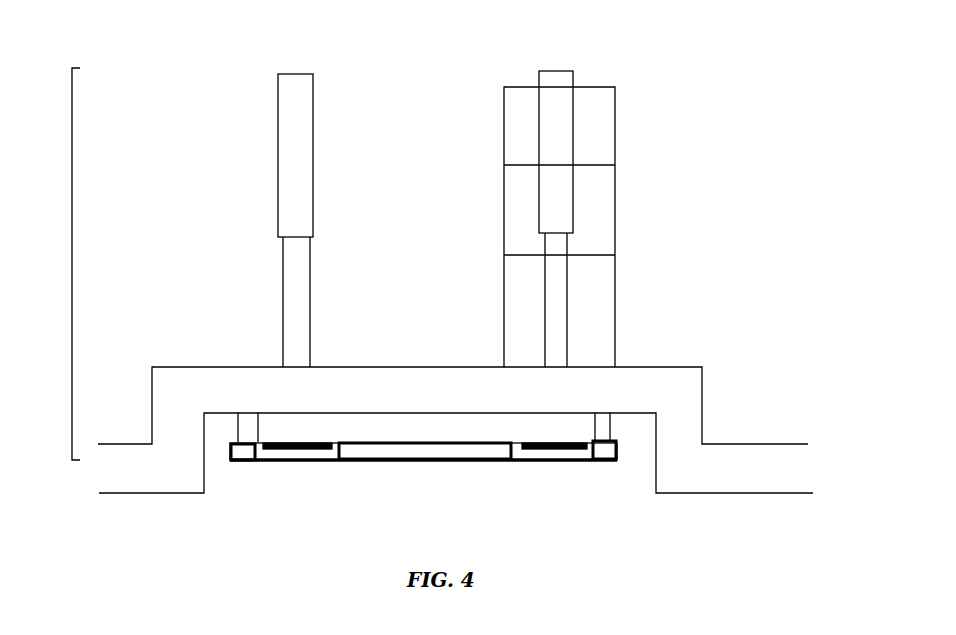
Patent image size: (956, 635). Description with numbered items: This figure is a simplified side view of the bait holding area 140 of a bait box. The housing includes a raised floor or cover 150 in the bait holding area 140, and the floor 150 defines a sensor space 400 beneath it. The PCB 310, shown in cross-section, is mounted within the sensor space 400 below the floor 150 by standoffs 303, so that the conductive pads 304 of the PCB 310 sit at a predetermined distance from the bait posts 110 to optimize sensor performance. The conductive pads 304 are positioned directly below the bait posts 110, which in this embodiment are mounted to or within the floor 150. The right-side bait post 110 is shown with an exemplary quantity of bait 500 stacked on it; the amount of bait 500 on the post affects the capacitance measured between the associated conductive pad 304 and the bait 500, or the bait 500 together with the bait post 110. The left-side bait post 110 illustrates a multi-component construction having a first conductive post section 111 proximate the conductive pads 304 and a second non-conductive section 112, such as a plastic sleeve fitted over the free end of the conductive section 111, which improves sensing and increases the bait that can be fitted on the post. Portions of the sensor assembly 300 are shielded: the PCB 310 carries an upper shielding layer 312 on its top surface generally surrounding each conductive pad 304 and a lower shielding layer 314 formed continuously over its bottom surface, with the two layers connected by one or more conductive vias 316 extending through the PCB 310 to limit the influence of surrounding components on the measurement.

The bait post 110 is at (569, 78).
The first conductive post section 111 is at (290, 293).
The second non-conductive section 112 is at (288, 165).
The bait holding area 140 is at (463, 365).
The floor 150 is at (707, 413).
The sensor assembly 300 is at (72, 265).
The standoff 303 is at (611, 439).
The conductive pad 304 is at (297, 450).
The PCB 310 is at (423, 494).
The upper shielding layer 312 is at (360, 443).
The lower shielding layer 314 is at (465, 460).
The conductive via 316 is at (240, 462).
The sensor space 400 is at (392, 476).
The bait 500 is at (617, 200).